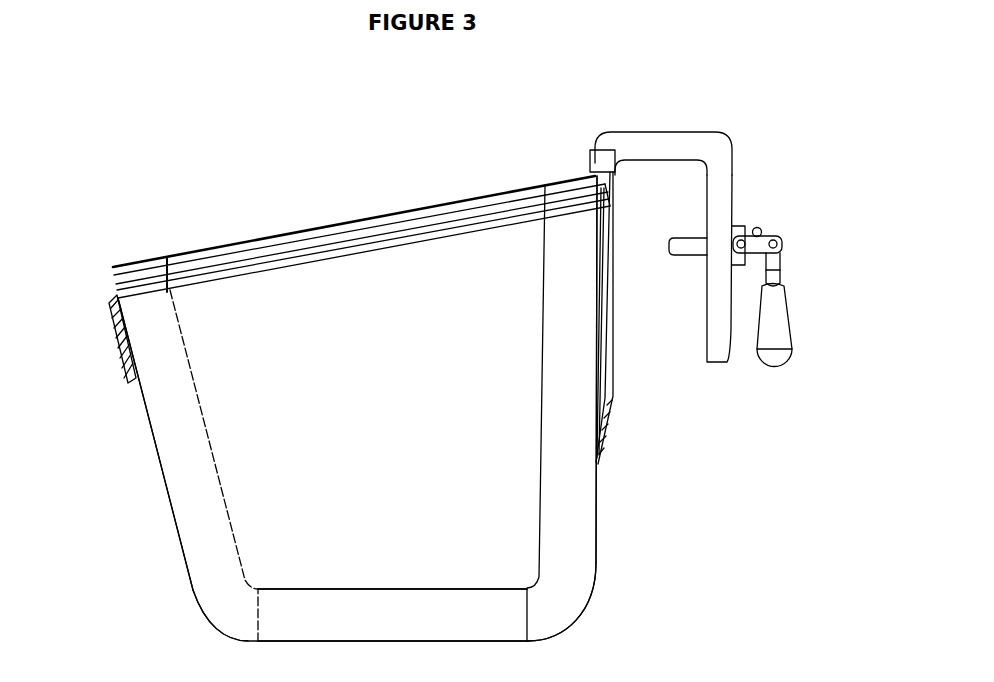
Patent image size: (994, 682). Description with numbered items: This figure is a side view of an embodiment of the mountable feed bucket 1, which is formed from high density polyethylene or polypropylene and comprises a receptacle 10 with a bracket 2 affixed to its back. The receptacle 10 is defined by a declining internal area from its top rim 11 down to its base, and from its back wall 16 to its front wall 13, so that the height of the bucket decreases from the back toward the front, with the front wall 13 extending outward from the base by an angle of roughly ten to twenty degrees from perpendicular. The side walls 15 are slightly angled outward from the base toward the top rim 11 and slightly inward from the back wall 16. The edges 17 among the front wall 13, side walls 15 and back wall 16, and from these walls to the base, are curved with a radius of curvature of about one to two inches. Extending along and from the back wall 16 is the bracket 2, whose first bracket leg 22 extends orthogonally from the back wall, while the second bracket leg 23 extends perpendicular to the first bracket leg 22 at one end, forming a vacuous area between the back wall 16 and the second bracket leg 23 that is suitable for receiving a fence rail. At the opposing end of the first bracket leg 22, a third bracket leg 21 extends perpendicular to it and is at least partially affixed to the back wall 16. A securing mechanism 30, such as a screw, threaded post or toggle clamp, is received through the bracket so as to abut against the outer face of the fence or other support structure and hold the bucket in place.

The mountable feed bucket 1 is at (327, 166).
The bracket 2 is at (679, 98).
The receptacle 10 is at (124, 460).
The top rim 11 is at (448, 218).
The front wall 13 is at (189, 568).
The side walls 15 is at (383, 542).
The back wall 16 is at (600, 525).
The edges 17 is at (232, 612).
The third bracket leg 21 is at (607, 387).
The first bracket leg 22 is at (655, 145).
The second bracket leg 23 is at (713, 200).
The securing mechanism 30 is at (778, 320).